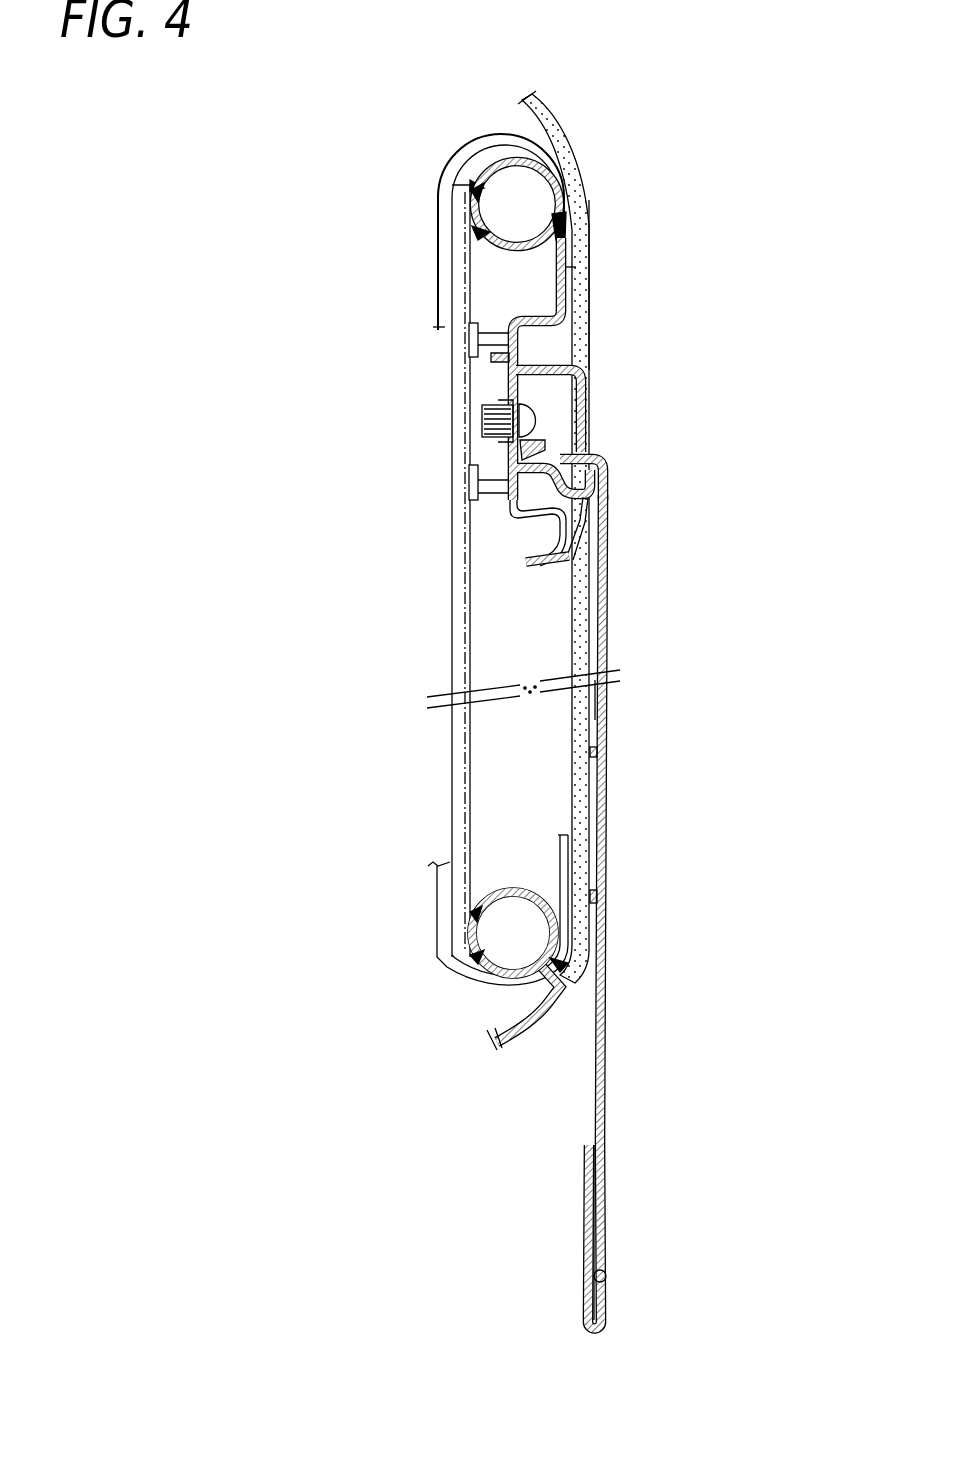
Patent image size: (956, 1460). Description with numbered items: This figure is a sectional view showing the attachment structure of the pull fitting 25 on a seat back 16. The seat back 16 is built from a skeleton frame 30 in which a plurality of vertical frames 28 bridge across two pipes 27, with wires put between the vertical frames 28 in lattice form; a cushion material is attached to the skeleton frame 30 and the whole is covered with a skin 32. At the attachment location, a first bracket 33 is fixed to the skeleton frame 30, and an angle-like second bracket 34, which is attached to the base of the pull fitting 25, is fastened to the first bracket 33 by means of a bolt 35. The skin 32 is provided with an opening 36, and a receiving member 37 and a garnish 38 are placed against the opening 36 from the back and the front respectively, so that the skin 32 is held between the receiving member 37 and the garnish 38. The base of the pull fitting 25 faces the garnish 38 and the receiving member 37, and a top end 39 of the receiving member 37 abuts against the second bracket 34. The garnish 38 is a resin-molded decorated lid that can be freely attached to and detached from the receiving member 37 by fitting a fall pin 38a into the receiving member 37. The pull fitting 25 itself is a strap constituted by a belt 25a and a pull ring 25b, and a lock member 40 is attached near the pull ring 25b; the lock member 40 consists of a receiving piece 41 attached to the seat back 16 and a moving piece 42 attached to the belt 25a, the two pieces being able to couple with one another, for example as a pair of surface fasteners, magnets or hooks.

The seat back 16 is at (618, 160).
The pull fitting 25 is at (627, 965).
The belt 25a is at (608, 693).
The pull ring 25b is at (606, 1280).
The pipes 27 is at (483, 190).
The vertical frames 28 is at (452, 568).
The skeleton frame 30 is at (405, 248).
The skin 32 is at (590, 232).
The first bracket 33 is at (481, 391).
The second bracket 34 is at (543, 383).
The bolt 35 is at (547, 423).
The opening 36 is at (593, 425).
The receiving member 37 is at (543, 575).
The garnish 38 is at (600, 462).
The fall pin 38a is at (508, 460).
The top end 39 is at (530, 348).
The lock member 40 is at (728, 825).
The receiving piece 41 is at (614, 827).
The moving piece 42 is at (621, 860).